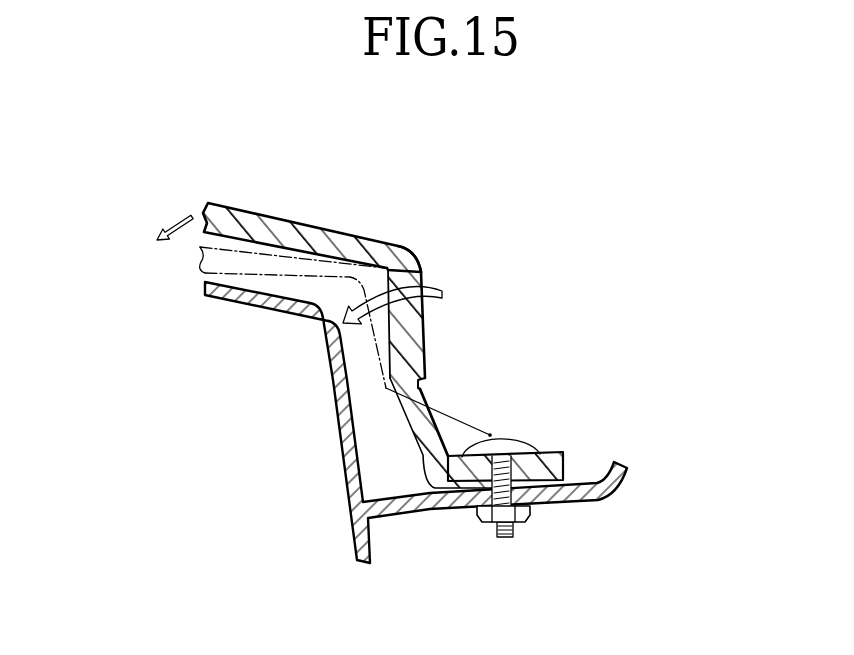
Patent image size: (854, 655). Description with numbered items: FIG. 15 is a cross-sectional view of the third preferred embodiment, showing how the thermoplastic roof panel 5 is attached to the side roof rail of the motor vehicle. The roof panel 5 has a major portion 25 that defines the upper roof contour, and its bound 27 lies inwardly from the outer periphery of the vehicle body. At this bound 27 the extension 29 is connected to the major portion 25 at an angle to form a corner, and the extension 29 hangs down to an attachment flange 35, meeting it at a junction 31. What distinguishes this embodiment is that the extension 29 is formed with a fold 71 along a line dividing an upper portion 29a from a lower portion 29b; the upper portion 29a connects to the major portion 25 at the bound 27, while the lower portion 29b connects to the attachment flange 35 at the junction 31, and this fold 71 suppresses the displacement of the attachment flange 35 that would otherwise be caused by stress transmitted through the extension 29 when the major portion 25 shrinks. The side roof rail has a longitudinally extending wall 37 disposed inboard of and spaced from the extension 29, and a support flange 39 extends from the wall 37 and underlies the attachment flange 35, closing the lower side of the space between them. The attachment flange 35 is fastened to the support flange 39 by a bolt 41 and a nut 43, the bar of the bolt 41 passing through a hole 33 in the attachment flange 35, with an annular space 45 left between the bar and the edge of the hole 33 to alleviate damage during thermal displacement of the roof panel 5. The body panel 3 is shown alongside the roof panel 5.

The roof panel 5 is at (273, 188).
The vehicle body panel 3 is at (379, 444).
The major portion 25 is at (325, 226).
The bound 27 is at (406, 251).
The extension 29 is at (425, 325).
The upper portion 29a is at (424, 270).
The lower portion 29b is at (443, 436).
The fold 71 is at (426, 386).
The junction 31 is at (436, 451).
The hole 33 is at (571, 504).
The attachment flange 35 is at (550, 457).
The wall 37 is at (436, 451).
The support flange 39 is at (602, 492).
The bolt 41 is at (503, 438).
The nut 43 is at (517, 537).
The annular space 45 is at (474, 521).